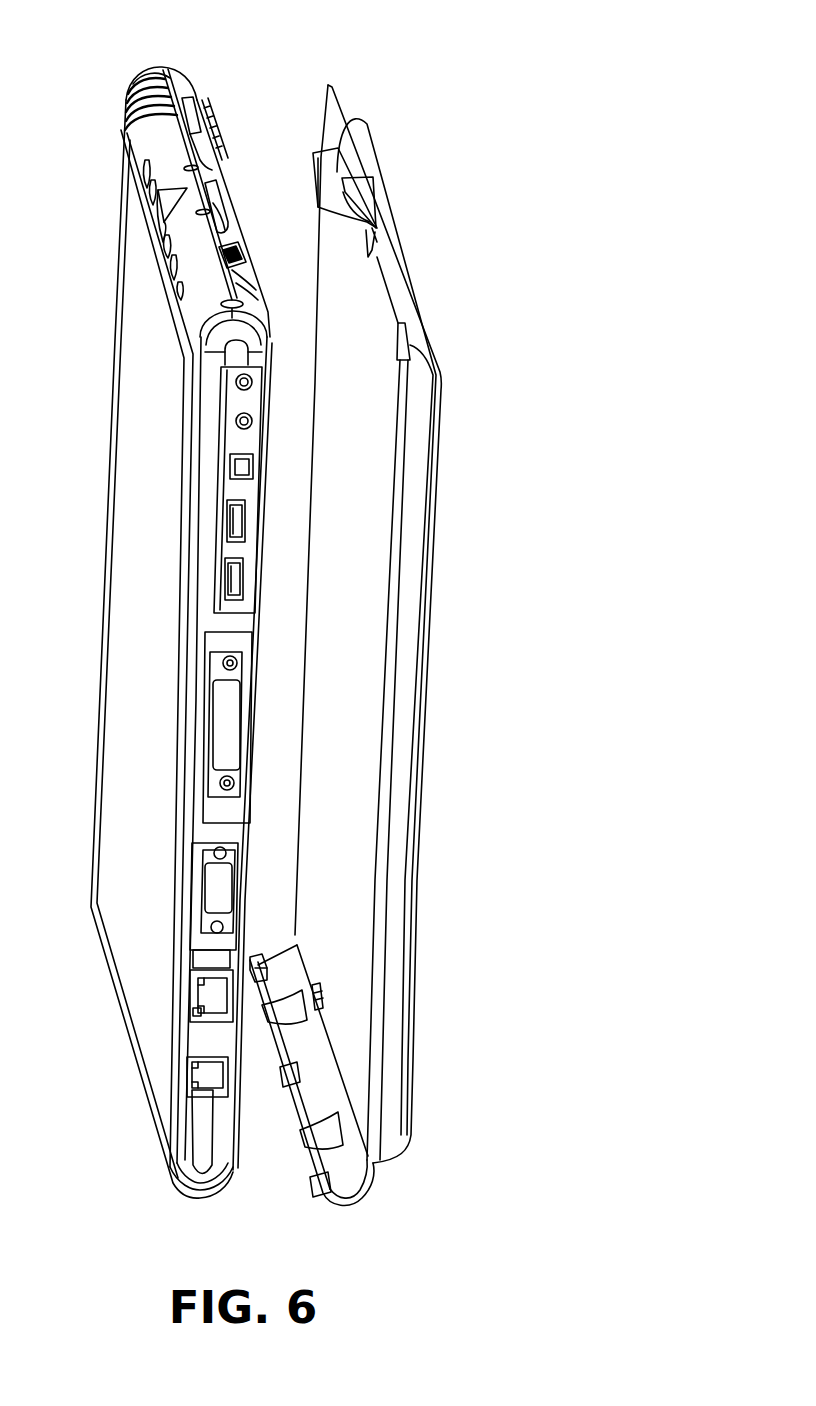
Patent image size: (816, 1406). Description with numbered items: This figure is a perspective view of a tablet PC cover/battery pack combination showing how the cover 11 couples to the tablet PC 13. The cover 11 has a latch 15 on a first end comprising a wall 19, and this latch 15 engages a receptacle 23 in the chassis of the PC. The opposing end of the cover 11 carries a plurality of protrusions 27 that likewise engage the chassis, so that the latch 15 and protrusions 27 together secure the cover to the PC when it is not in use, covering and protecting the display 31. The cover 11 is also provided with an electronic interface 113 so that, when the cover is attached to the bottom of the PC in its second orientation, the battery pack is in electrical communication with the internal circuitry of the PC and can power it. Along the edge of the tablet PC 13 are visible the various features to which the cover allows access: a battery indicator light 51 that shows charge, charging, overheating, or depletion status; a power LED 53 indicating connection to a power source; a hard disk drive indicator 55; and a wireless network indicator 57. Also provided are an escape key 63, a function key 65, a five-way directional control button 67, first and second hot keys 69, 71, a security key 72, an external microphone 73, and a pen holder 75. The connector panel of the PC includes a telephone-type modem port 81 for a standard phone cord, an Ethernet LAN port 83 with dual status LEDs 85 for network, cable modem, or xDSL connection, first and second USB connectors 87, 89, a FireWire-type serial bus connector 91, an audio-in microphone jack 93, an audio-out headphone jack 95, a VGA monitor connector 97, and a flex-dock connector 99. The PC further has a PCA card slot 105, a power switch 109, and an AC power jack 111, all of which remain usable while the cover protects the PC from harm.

The cover 11 is at (338, 681).
The tablet PC 13 is at (188, 1217).
The latch 15 is at (308, 186).
The wall 19 is at (340, 160).
The receptacle 23 is at (223, 208).
The protrusions 27 is at (262, 962).
The display 31 is at (120, 740).
The battery indicator light 51 is at (140, 110).
The power LED 53 is at (137, 100).
The hard disk drive indicator 55 is at (143, 117).
The wireless network indicator 57 is at (143, 130).
The escape key 63 is at (143, 175).
The function key 65 is at (150, 203).
The 5-way directional control button 67 is at (157, 228).
The first hot key 69 is at (167, 267).
The second hot key 71 is at (173, 282).
The security key 72 is at (182, 302).
The external microphone 73 is at (188, 477).
The pen holder 75 is at (146, 80).
The RJ-11 port 81 is at (192, 1073).
The RJ-45 Ethernet LAN port 83 is at (195, 1012).
The dual status LEDs 85 is at (205, 995).
The first USB connector 87 is at (243, 580).
The second USB connector 89 is at (244, 522).
The IEEE 1394 connector 91 is at (251, 467).
The audio-in jack 93 is at (255, 422).
The audio-out jack 95 is at (255, 382).
The VGA monitor connector 97 is at (229, 890).
The flex-dock connector 99 is at (233, 733).
The PCA card slot 105 is at (198, 141).
The power switch 109 is at (243, 262).
The AC power jack 111 is at (257, 297).
The electronic interface 113 is at (322, 1003).